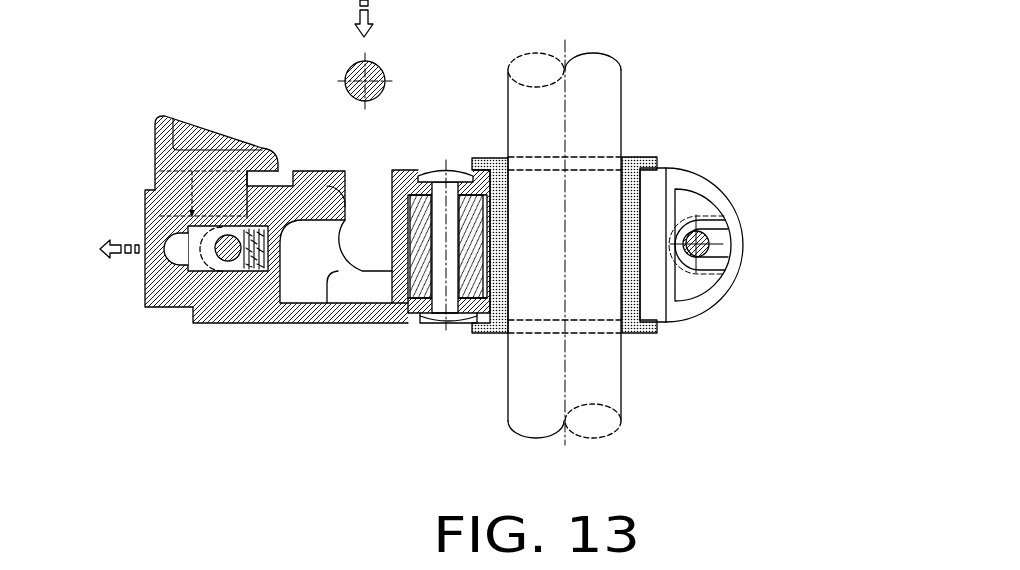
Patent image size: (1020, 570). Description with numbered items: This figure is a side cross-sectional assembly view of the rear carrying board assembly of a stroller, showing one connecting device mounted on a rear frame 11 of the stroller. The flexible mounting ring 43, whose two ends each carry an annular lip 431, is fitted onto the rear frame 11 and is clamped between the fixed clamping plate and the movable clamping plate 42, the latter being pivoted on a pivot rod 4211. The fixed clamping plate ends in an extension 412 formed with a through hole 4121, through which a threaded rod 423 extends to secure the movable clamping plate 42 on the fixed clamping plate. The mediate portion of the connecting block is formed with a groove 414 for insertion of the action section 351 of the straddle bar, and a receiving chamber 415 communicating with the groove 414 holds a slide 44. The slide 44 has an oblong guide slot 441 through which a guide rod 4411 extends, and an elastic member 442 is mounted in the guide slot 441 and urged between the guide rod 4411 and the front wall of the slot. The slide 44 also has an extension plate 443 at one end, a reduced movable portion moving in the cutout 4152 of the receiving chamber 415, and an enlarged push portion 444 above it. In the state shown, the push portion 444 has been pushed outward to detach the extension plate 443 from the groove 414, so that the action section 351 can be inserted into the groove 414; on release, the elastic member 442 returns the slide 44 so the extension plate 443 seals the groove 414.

The rear frame 11 is at (607, 120).
The action section 351 is at (353, 65).
The cutout 4152 is at (283, 178).
The groove 414 is at (364, 194).
The annular lip 431 is at (648, 165).
The mounting ring 43 is at (632, 212).
The extension 412 is at (725, 205).
The threaded rod 423 is at (727, 228).
The through hole 4121 is at (739, 255).
The push portion 444 is at (168, 132).
The guide slot 441 is at (178, 253).
The slide 44 is at (167, 298).
The guide rod 4411 is at (200, 270).
The elastic member 442 is at (252, 268).
The receiving chamber 415 is at (293, 287).
The extension plate 443 is at (320, 207).
The pivot rod 4211 is at (442, 315).
The movable clamping plate 42 is at (473, 282).